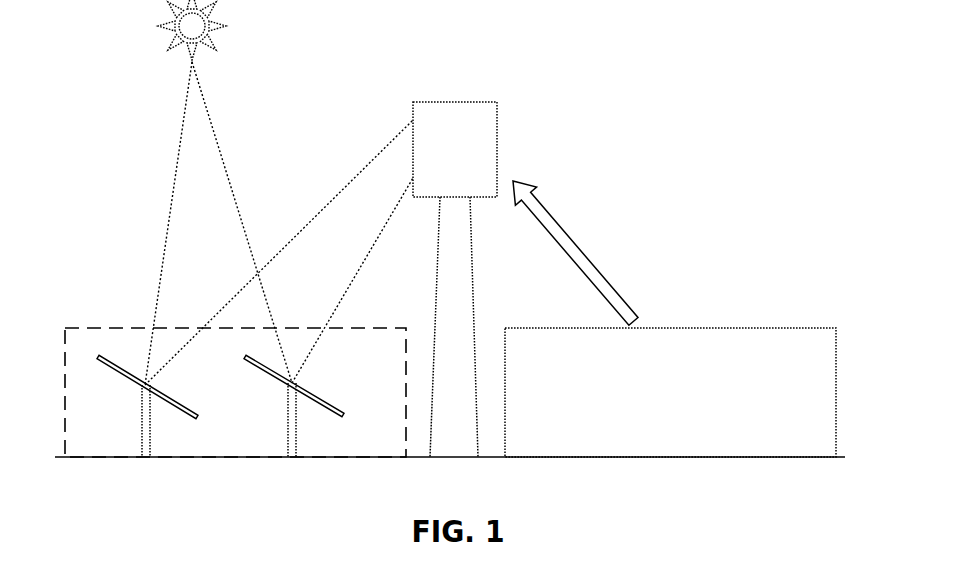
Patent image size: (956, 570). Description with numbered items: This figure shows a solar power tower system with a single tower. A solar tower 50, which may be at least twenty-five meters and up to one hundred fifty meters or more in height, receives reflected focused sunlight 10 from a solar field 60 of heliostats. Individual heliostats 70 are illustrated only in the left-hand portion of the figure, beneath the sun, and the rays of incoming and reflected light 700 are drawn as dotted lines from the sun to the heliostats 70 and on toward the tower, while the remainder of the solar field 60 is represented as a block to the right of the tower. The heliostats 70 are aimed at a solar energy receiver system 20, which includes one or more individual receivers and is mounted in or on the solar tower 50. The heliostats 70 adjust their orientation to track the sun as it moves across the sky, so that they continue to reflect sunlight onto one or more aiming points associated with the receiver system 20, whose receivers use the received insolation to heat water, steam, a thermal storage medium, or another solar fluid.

The reflected focused sunlight 10 is at (604, 253).
The solar energy receiver system 20 is at (455, 149).
The solar tower 50 is at (507, 260).
The solar field 60 is at (449, 347).
The heliostats 70 is at (213, 436).
The light rays 700 is at (253, 223).